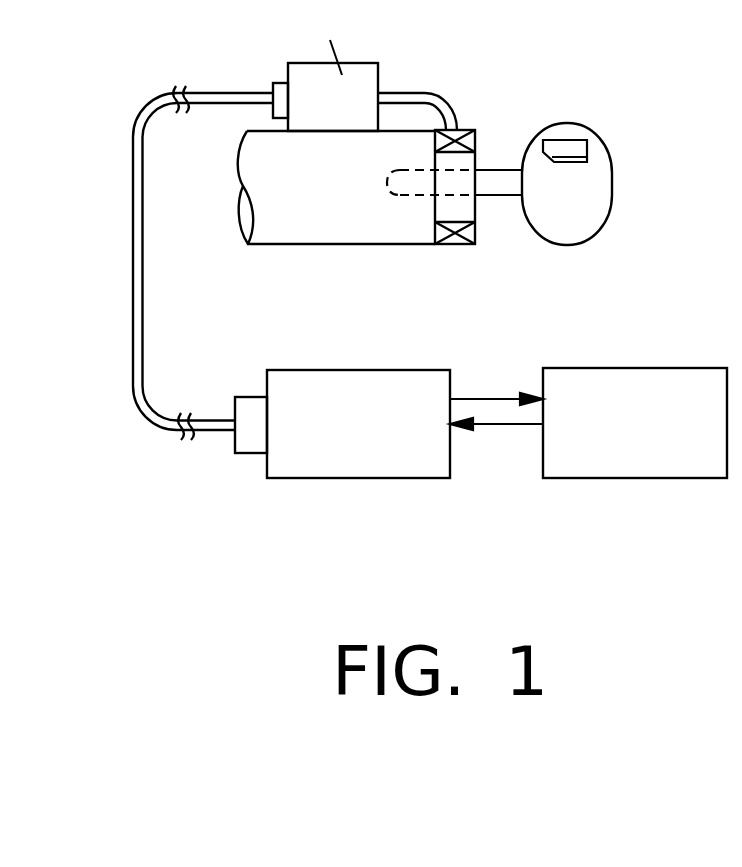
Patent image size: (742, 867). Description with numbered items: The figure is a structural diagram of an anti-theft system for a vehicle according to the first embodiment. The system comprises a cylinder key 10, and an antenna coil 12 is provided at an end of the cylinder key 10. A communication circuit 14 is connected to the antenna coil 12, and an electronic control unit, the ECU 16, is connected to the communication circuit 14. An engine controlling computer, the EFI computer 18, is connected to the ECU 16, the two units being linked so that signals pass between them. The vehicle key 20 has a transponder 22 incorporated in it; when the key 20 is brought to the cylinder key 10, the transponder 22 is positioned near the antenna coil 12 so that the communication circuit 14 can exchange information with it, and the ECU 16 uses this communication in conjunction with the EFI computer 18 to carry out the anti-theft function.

The cylinder key 10 is at (358, 225).
The antenna coil 12 is at (455, 238).
The communication circuit 14 is at (363, 72).
The electronic control unit (ECU) 16 is at (398, 470).
The engine controlling computer (EFI computer) 18 is at (647, 468).
The key 20 is at (597, 180).
The transponder 22 is at (565, 145).